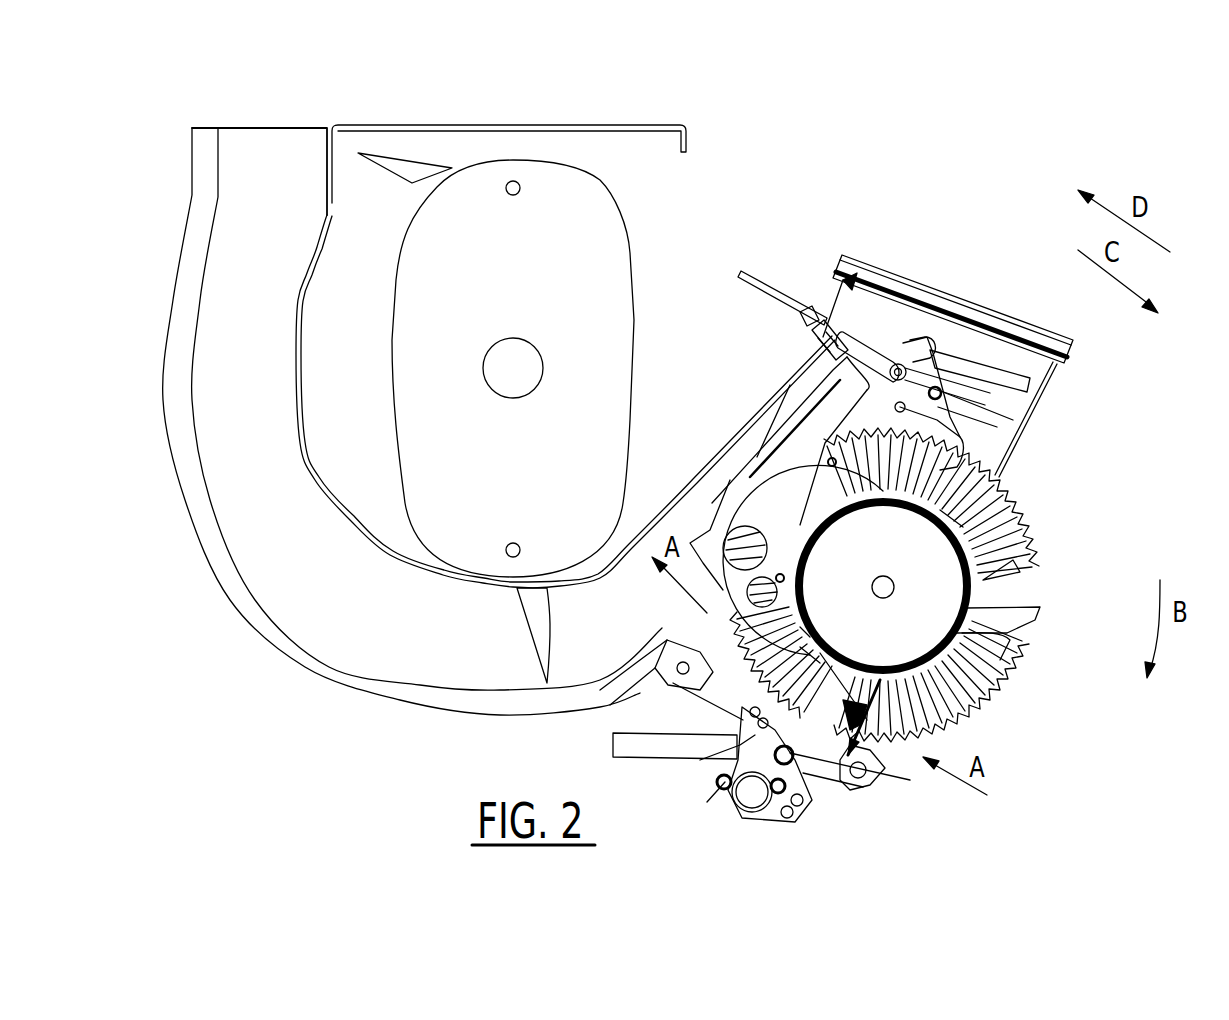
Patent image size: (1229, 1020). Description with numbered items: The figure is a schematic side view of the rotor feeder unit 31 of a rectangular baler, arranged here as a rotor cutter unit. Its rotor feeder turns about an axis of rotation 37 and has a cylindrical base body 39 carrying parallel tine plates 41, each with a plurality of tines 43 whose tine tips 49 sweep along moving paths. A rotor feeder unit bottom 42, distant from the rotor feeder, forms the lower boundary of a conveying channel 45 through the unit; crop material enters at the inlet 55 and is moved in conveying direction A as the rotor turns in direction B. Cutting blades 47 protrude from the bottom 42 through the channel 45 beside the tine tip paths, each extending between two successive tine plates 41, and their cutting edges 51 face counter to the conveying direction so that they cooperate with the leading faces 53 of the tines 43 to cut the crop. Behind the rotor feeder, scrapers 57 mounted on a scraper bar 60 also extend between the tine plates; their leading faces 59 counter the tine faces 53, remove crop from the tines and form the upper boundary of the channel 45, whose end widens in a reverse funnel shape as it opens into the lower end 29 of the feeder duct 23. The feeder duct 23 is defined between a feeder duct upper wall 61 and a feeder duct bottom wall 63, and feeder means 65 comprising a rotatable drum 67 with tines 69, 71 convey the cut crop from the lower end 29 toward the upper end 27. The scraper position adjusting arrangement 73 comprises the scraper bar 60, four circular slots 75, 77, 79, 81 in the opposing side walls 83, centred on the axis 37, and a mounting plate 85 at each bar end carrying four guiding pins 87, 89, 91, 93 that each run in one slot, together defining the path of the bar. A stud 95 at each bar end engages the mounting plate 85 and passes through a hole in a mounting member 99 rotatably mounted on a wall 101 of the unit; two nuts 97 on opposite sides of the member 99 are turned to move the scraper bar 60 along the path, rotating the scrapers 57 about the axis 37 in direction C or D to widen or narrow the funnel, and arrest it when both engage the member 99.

The feeder duct 23 is at (327, 575).
The upper end 27 is at (263, 157).
The lower end 29 is at (657, 623).
The rotor feeder unit 31 is at (1160, 370).
The axis of rotation 37 is at (892, 583).
The cylindrical base body 39 is at (953, 635).
The tine plates 41 is at (990, 575).
The rotor feeder unit bottom 42 is at (720, 733).
The tines 43 is at (1007, 587).
The conveying channel 45 is at (730, 677).
The cutting blades 47 is at (817, 750).
The tine tips 49 is at (1000, 687).
The cutting edges 51 is at (880, 680).
The leading faces 53 is at (835, 768).
The inlet 55 is at (925, 797).
The scrapers 57 is at (783, 497).
The leading faces 59 is at (690, 590).
The scraper bar 60 is at (833, 370).
The feeder duct upper wall 61 is at (318, 446).
The feeder duct bottom wall 63 is at (260, 580).
The feeder means 65 is at (362, 312).
The rotatable drum 67 is at (410, 423).
The tines 69 is at (540, 611).
The tines 71 is at (410, 173).
The scraper position adjusting arrangement 73 is at (850, 275).
The slot 75 is at (1003, 387).
The slot 77 is at (990, 400).
The slot 79 is at (990, 427).
The slot 81 is at (957, 450).
The side walls 83 is at (987, 343).
The mounting plate 85 is at (828, 460).
The guiding pin 87 is at (935, 355).
The guiding pin 89 is at (898, 365).
The guiding pin 91 is at (937, 400).
The guiding pin 93 is at (910, 440).
The stud 95 is at (772, 290).
The nuts 97 is at (807, 313).
The mounting member 99 is at (817, 320).
The wall 101 is at (787, 390).